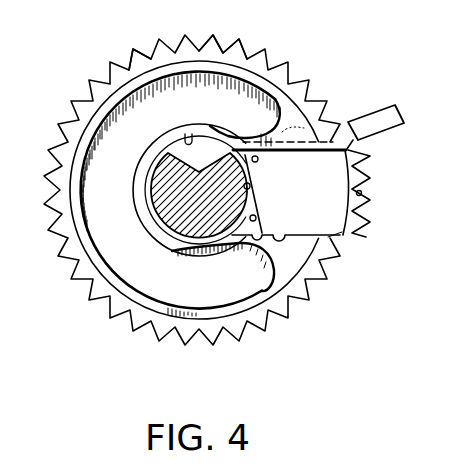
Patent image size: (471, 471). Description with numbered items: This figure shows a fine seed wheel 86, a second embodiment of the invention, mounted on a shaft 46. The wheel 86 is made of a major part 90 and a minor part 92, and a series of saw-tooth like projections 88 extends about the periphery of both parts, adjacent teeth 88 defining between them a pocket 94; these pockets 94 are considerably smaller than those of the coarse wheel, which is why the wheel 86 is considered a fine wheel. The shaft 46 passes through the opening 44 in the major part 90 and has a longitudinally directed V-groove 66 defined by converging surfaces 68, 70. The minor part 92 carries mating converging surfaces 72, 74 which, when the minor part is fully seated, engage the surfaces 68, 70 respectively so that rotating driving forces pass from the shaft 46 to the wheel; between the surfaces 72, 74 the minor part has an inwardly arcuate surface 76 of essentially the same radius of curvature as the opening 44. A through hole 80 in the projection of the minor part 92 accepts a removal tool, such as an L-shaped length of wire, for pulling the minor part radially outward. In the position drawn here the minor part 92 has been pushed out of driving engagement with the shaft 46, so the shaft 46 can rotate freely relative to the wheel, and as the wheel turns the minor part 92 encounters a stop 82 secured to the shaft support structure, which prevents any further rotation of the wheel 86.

The opening 44 is at (137, 79).
The shaft 46 is at (173, 214).
The V-groove 66 is at (195, 146).
The converging surface 68 is at (173, 134).
The converging surface 70 is at (212, 134).
The mating converging surface 72 is at (258, 161).
The mating converging surface 74 is at (256, 217).
The inwardly arcuate surface 76 is at (250, 186).
The through hole 80 is at (362, 192).
The stop 82 is at (373, 115).
The wheel 86 is at (135, 46).
The saw-tooth like projections 88 is at (213, 42).
The major part 90 is at (287, 117).
The minor part 92 is at (333, 207).
The pocket 94 is at (273, 58).